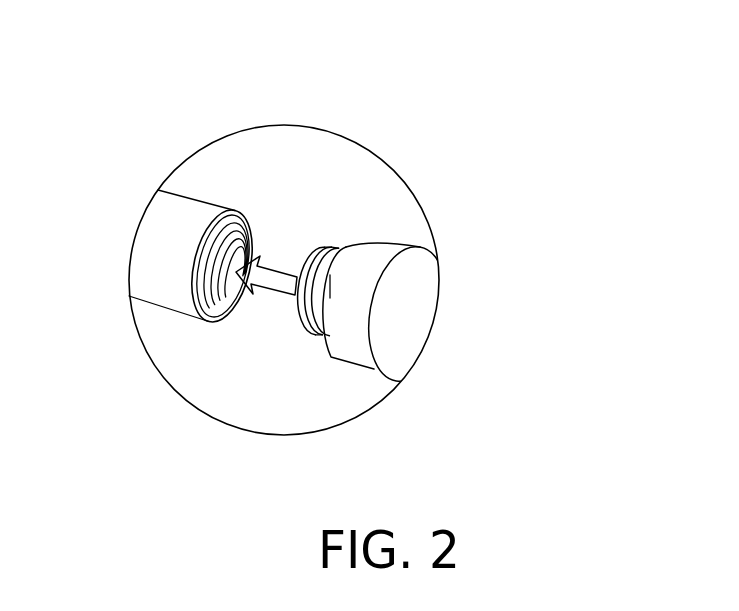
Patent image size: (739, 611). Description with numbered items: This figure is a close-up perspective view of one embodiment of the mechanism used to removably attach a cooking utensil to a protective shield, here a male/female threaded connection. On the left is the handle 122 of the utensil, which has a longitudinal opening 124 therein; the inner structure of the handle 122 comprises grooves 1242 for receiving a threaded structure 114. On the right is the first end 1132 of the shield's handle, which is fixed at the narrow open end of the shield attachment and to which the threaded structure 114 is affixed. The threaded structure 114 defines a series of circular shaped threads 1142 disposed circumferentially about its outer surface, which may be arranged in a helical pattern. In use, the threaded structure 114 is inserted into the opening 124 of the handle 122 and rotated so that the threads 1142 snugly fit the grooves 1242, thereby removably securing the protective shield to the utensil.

The handle 122 is at (198, 222).
The grooves 1242 is at (243, 210).
The longitudinal opening 124 is at (228, 300).
The threaded structure 114 is at (323, 249).
The threads 1142 is at (346, 248).
The first end 1132 is at (387, 350).